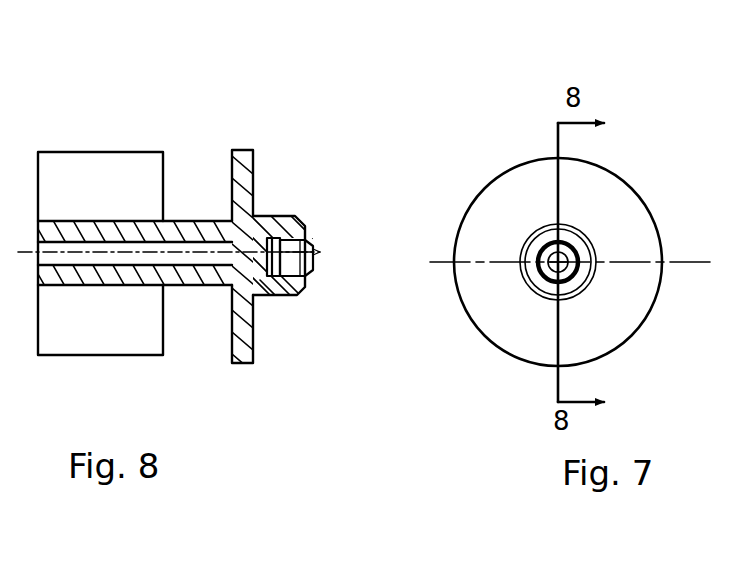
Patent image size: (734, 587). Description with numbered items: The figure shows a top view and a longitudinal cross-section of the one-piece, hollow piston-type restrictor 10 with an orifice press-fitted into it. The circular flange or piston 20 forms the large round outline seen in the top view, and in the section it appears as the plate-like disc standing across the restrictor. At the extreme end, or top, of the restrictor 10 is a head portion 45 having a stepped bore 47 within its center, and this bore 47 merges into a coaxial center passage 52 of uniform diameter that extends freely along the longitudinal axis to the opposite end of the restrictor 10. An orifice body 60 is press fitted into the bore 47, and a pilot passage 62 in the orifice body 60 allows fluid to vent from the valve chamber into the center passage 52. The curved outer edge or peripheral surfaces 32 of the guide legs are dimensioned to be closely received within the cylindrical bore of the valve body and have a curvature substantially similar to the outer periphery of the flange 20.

In FIG. 8, the restrictor 10 is at (164, 86).
In FIG. 7, the restrictor 10 is at (647, 176).
In FIG. 8, the flange 20 is at (256, 152).
In FIG. 7, the flange 20 is at (505, 172).
In FIG. 8, the peripheral surfaces 32 is at (90, 150).
In FIG. 8, the head portion 45 is at (285, 297).
In FIG. 8, the stepped bore 47 is at (298, 238).
In FIG. 8, the center passage 52 is at (145, 247).
In FIG. 8, the orifice body 60 is at (304, 243).
In FIG. 7, the orifice body 60 is at (576, 246).
In FIG. 8, the pilot passage 62 is at (314, 263).